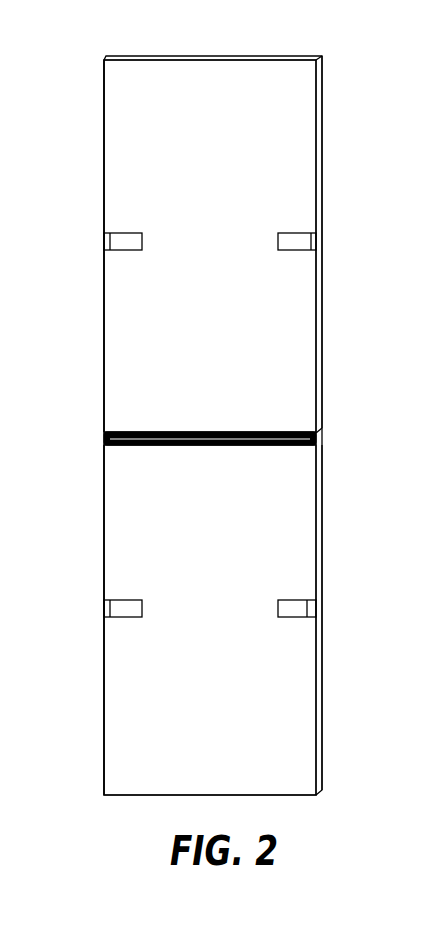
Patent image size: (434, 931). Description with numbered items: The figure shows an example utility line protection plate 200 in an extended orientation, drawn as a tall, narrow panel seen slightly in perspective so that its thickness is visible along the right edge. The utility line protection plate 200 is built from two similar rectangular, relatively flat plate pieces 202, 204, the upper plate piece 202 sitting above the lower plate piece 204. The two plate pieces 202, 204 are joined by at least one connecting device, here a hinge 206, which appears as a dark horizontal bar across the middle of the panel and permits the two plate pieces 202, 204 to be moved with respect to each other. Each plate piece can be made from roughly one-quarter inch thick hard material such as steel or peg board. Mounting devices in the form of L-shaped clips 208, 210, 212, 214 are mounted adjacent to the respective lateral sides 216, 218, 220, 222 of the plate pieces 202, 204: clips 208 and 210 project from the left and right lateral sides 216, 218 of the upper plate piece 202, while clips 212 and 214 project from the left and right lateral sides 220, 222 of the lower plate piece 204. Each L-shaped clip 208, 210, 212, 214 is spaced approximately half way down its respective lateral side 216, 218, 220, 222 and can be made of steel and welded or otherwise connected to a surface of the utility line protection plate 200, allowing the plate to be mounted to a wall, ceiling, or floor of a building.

The utility line protection plate 200 is at (355, 140).
The plate piece 202 is at (193, 180).
The plate piece 204 is at (185, 562).
The hinge 206 is at (240, 433).
The L-shaped clip 208 is at (118, 232).
The L-shaped clip 210 is at (300, 233).
The L-shaped clip 212 is at (117, 600).
The L-shaped clip 214 is at (285, 600).
The lateral side 216 is at (104, 287).
The lateral side 218 is at (323, 272).
The lateral side 220 is at (104, 638).
The lateral side 222 is at (323, 638).